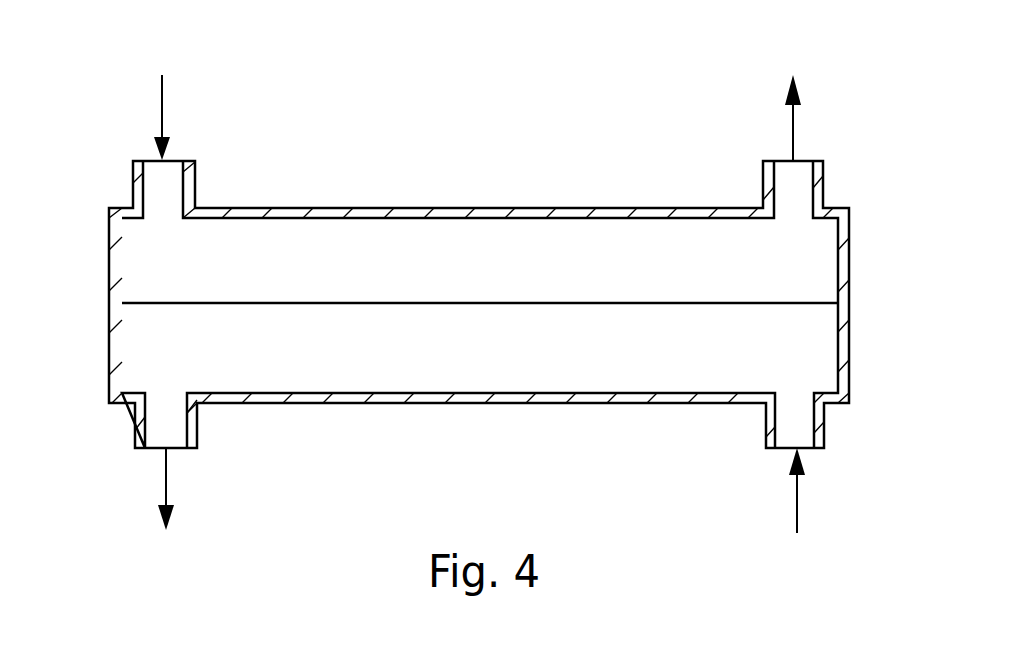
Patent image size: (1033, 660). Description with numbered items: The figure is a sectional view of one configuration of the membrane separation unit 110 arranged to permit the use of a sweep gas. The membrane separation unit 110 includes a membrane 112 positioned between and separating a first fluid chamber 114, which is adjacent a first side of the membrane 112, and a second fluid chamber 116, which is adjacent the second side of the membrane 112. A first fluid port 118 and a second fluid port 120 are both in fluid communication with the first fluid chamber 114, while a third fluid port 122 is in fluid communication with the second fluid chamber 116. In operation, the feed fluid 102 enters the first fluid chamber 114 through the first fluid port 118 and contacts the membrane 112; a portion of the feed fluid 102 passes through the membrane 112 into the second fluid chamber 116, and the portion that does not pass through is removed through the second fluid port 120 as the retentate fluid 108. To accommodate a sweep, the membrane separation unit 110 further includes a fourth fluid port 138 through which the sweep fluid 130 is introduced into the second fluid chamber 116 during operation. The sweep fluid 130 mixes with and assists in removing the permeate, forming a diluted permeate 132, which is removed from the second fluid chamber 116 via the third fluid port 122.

The feed fluid 102 is at (161, 103).
The retentate fluid 108 is at (794, 99).
The membrane separation unit 110 is at (427, 174).
The membrane 112 is at (527, 303).
The first fluid chamber 114 is at (570, 267).
The second fluid chamber 116 is at (373, 358).
The first fluid port 118 is at (148, 165).
The second fluid port 120 is at (805, 177).
The third fluid port 122 is at (156, 430).
The sweep fluid 130 is at (798, 508).
The diluted permeate 132 is at (166, 510).
The fourth fluid port 138 is at (808, 420).